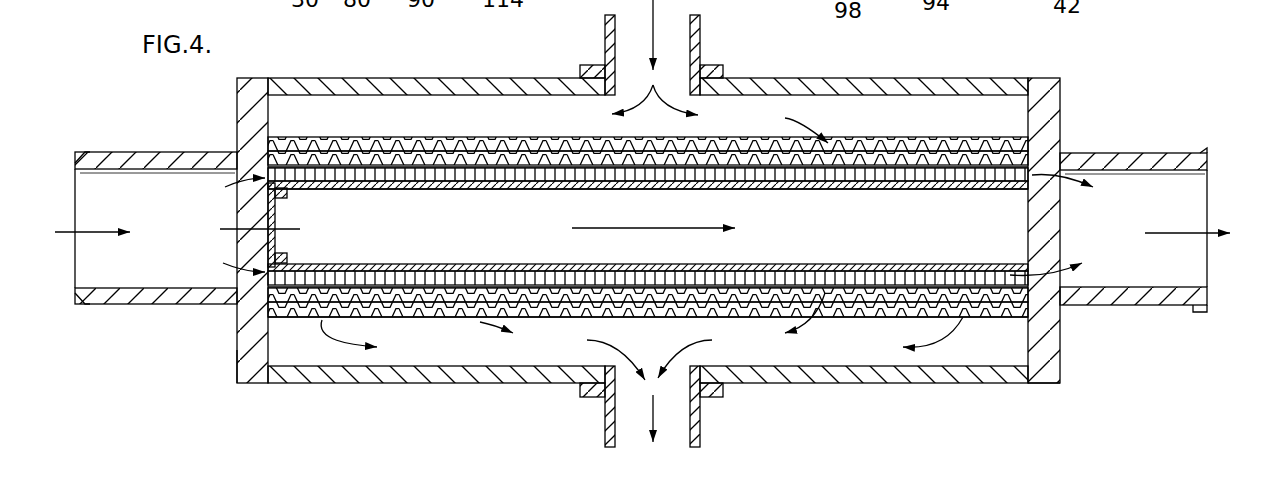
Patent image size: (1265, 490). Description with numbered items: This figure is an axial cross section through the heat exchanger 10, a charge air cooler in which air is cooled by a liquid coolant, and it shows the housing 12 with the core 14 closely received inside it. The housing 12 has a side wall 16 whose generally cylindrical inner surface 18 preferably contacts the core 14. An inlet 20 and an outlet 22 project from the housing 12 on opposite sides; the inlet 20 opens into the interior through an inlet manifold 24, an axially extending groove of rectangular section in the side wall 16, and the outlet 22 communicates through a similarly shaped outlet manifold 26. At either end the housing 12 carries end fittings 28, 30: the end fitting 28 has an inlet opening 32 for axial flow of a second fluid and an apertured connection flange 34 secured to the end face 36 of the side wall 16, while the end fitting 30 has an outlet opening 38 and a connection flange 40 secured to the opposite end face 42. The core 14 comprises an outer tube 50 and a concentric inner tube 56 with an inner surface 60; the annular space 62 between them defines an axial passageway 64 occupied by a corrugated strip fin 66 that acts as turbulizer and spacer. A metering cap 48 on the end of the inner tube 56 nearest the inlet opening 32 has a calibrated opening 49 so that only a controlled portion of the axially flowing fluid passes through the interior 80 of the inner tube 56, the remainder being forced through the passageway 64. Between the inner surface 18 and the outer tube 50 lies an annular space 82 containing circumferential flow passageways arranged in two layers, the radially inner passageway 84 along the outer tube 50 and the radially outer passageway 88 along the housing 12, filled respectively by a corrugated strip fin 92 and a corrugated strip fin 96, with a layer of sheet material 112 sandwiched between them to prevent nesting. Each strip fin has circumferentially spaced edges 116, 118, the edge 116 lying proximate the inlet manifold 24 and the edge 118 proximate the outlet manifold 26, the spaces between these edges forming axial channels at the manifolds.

The heat exchanger 10 is at (397, 389).
The housing 12 is at (822, 394).
The core 14 is at (1024, 128).
The side wall 16 is at (888, 78).
The inner surface 18 is at (287, 320).
The inlet 20 is at (704, 42).
The outlet 22 is at (705, 418).
The inlet manifold 24 is at (470, 136).
The outlet manifold 26 is at (732, 357).
The end fitting 28 is at (163, 147).
The end fitting 30 is at (1131, 152).
The inlet opening 32 is at (75, 180).
The connection flange 34 is at (237, 352).
The end face 36 is at (266, 78).
The outlet opening 38 is at (1208, 184).
The connection flange 40 is at (1060, 333).
The end face 42 is at (1036, 374).
The metering cap 48 is at (268, 212).
The calibrated opening 49 is at (276, 220).
The outer tube 50 is at (404, 136).
The inner tube 56 is at (390, 189).
The inner surface 60 is at (460, 189).
The annular space 62 is at (790, 181).
The passageway 64 is at (866, 181).
The corrugated strip fin 66 is at (936, 274).
The interior 80 is at (657, 224).
The annular space 82 is at (993, 320).
The circumferential fluid flow passageway 84 is at (268, 301).
The circumferential fluid flow passageway 88 is at (427, 320).
The corrugated strip fin 92 is at (320, 266).
The corrugated strip fin 96 is at (393, 318).
The layer of sheet material 112 is at (523, 320).
The edge 116 is at (328, 149).
The edge 118 is at (310, 318).